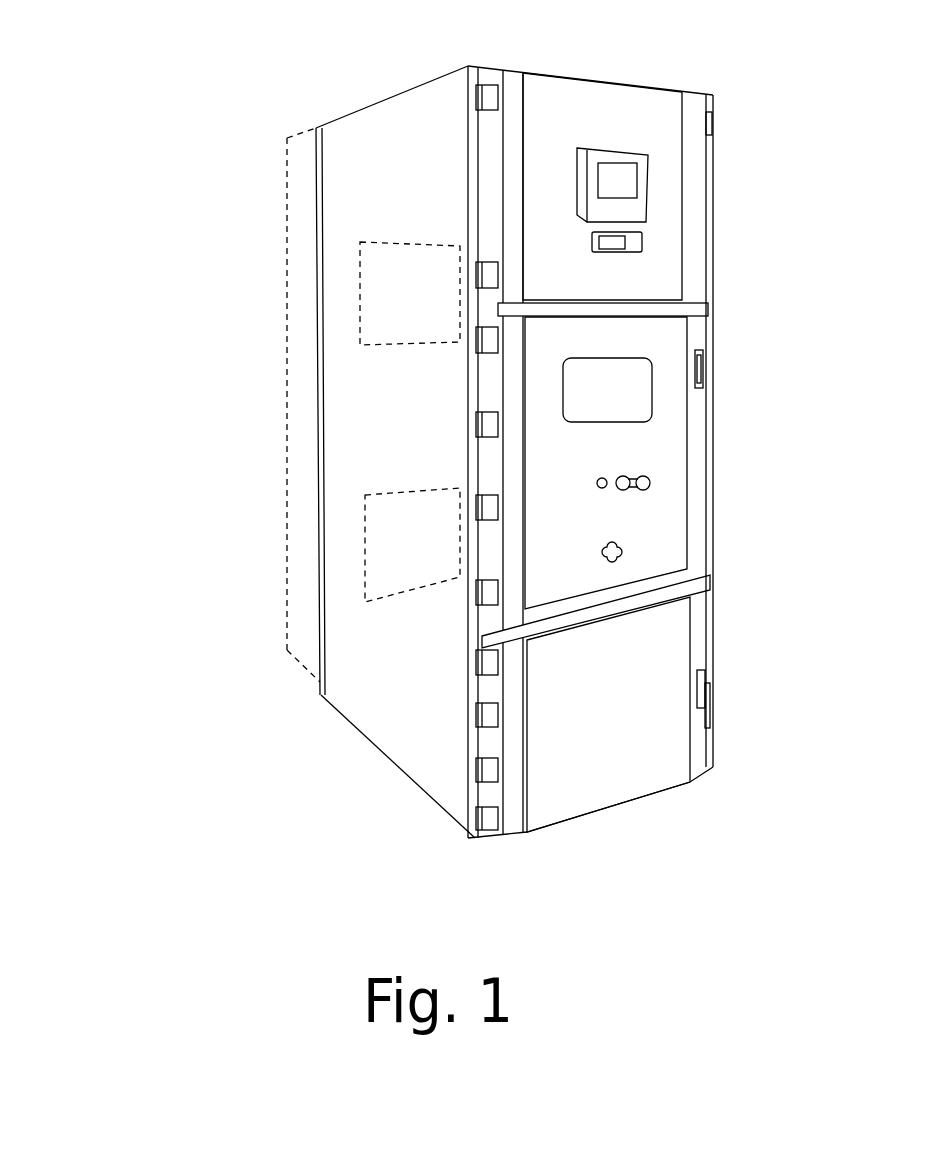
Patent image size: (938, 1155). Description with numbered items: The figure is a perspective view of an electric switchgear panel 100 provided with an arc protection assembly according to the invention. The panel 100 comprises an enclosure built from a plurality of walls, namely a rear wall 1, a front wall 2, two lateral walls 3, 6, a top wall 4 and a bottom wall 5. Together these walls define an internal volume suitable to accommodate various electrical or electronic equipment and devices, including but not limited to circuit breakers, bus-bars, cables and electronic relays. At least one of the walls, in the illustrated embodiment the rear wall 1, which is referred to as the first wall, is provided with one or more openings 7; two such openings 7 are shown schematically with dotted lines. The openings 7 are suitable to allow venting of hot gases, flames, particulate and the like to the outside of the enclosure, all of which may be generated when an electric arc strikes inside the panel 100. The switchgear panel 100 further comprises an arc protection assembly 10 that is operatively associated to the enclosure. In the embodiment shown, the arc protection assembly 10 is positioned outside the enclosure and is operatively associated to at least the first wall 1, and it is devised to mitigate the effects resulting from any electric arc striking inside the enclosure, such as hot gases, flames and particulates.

The electric switchgear panel 100 is at (232, 695).
The rear wall 1 is at (327, 171).
The front wall 2 is at (650, 330).
The lateral wall 3 is at (716, 447).
The top wall 4 is at (637, 84).
The bottom wall 5 is at (618, 805).
The lateral wall 6 is at (423, 753).
The opening 7 is at (396, 272).
The arc protection assembly 10 is at (301, 363).